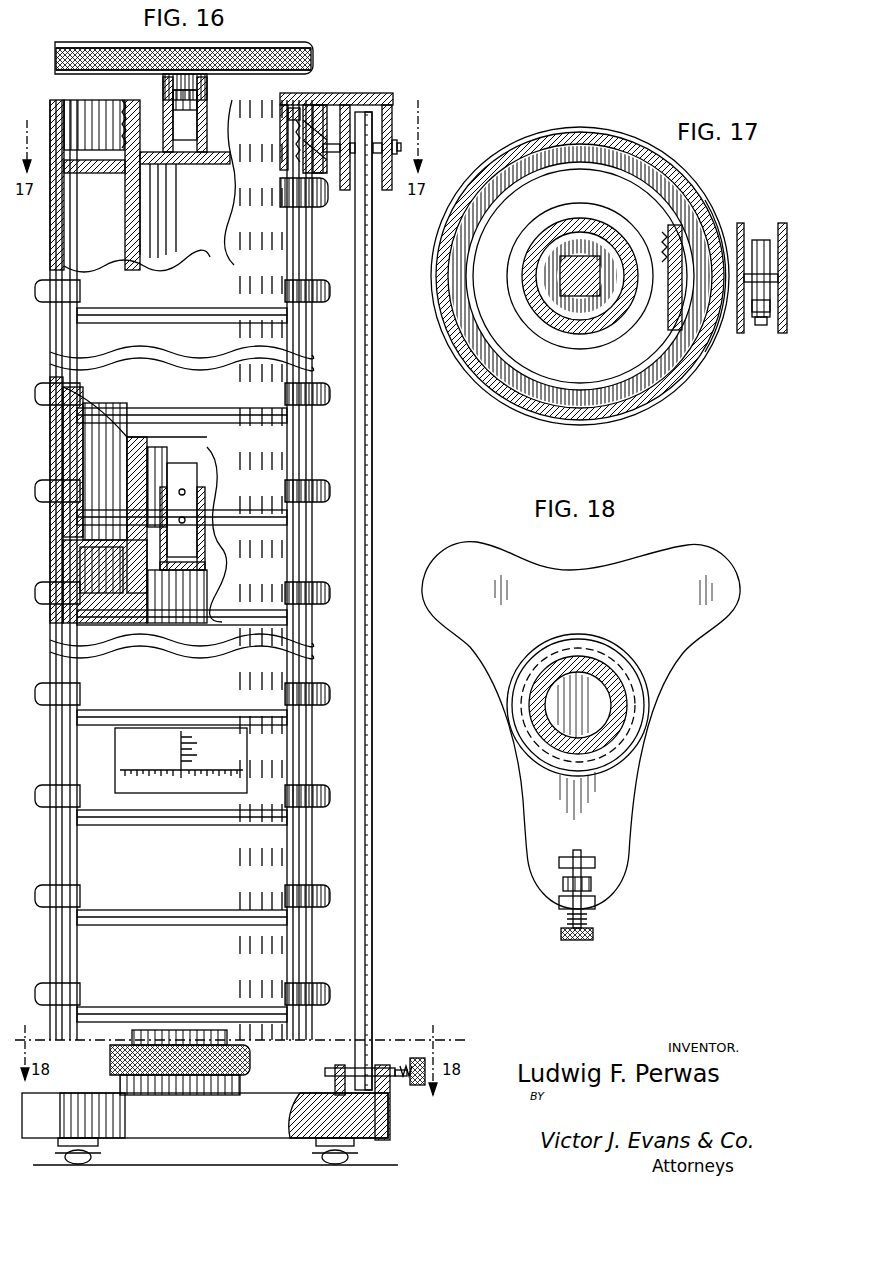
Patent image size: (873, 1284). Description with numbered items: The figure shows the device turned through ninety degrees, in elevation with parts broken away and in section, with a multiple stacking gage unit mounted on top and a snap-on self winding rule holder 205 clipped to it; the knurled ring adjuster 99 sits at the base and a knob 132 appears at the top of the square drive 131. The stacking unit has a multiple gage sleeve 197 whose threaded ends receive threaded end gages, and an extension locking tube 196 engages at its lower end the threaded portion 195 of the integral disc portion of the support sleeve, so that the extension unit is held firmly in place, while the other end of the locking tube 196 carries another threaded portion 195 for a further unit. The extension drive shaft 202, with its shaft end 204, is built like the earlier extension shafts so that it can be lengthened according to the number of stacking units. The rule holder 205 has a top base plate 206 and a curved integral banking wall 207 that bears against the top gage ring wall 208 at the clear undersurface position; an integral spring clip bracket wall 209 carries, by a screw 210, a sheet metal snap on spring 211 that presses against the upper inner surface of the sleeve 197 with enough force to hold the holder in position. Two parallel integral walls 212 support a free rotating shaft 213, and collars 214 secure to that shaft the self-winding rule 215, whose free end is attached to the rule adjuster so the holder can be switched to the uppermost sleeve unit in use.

In FIG. 16, the full inch knurled ring adjuster 99 is at (250, 1062).
In FIG. 18, the full inch knurled ring adjuster 99 is at (628, 740).
In FIG. 16, the square shaft 131 is at (205, 112).
In FIG. 17, the square shaft 131 is at (578, 290).
In FIG. 16, the knurled knob 132 is at (320, 32).
In FIG. 16, the threaded portion 195 is at (125, 120).
In FIG. 17, the threaded portion 195 is at (567, 228).
In FIG. 16, the extension locking tube 196 is at (125, 230).
In FIG. 16, the multiple gage sleeve 197 is at (70, 248).
In FIG. 17, the multiple gage sleeve 197 is at (686, 322).
In FIG. 16, the shaft 202 is at (195, 205).
In FIG. 16, the shaft end 204 is at (172, 115).
In FIG. 17, the shaft end 204 is at (563, 283).
In FIG. 16, the snap-on self winding rule holder 205 is at (382, 133).
In FIG. 17, the snap-on self winding rule holder 205 is at (790, 318).
In FIG. 16, the top base plate 206 is at (393, 95).
In FIG. 16, the curved integral banking wall 207 is at (350, 120).
In FIG. 17, the curved integral banking wall 207 is at (740, 222).
In FIG. 16, the top gage ring wall 208 is at (335, 104).
In FIG. 17, the top gage ring wall 208 is at (660, 372).
In FIG. 16, the integral spring clip bracket wall 209 is at (300, 130).
In FIG. 17, the integral spring clip bracket wall 209 is at (600, 218).
In FIG. 16, the screw 210 is at (305, 115).
In FIG. 17, the screw 210 is at (670, 245).
In FIG. 16, the sheet metal snap on spring 211 is at (305, 172).
In FIG. 16, the parallel integral walls 212 is at (385, 185).
In FIG. 17, the parallel integral walls 212 is at (760, 235).
In FIG. 16, the free rotating shaft 213 is at (398, 148).
In FIG. 16, the collars 214 is at (400, 145).
In FIG. 17, the collars 214 is at (790, 250).
In FIG. 16, the self-winding rule 215 is at (372, 116).
In FIG. 17, the self-winding rule 215 is at (758, 325).
In FIG. 18, the self-winding rule 215 is at (560, 882).